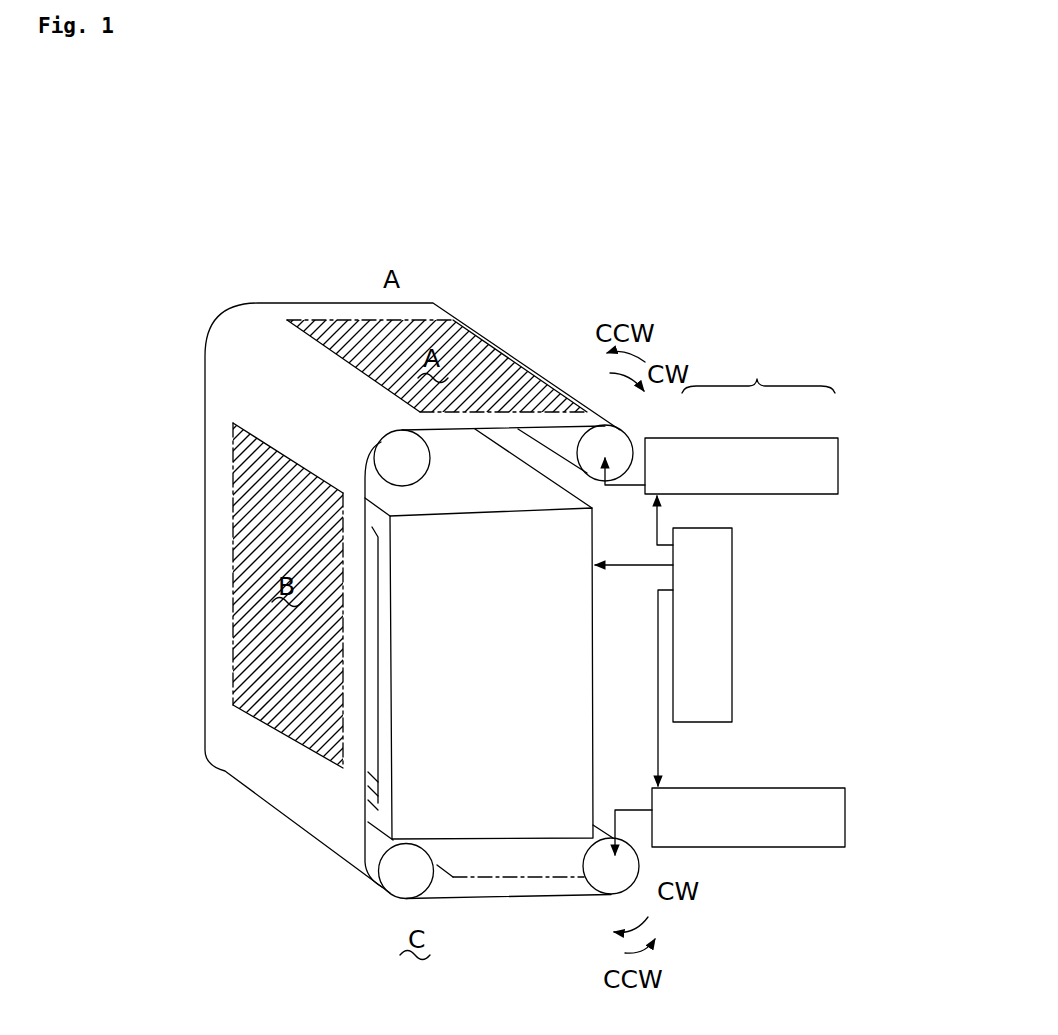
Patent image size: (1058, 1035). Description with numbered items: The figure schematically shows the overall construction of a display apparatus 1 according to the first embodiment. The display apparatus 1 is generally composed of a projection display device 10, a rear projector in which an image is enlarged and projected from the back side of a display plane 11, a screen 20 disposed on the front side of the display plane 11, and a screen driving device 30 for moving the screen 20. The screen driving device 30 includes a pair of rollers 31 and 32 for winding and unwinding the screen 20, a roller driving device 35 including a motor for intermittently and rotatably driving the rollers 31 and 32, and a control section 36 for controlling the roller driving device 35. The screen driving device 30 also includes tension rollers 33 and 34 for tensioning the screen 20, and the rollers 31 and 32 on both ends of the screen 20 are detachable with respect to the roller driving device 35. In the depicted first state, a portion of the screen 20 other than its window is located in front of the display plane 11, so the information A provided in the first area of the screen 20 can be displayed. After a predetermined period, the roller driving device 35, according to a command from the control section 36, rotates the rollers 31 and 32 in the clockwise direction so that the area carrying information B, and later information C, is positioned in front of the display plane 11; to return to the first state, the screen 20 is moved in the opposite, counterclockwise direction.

The display apparatus 1 is at (760, 278).
The projection display device 10 is at (593, 770).
The display plane 11 is at (372, 777).
The screen 20 is at (205, 393).
The screen driving device 30 is at (758, 371).
The roller 31 is at (615, 443).
The roller 32 is at (612, 873).
The tension roller 33 is at (400, 457).
The tension roller 34 is at (405, 877).
The roller driving device 35 is at (762, 448).
The control section 36 is at (732, 675).